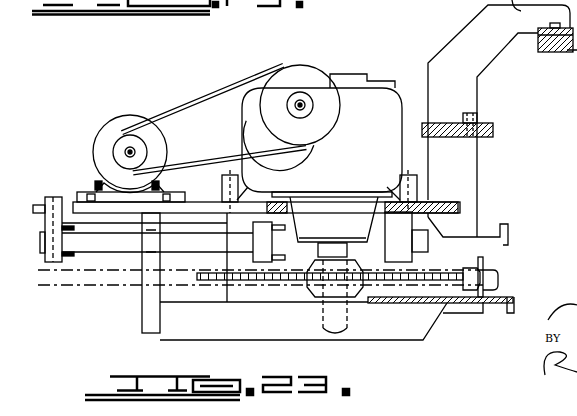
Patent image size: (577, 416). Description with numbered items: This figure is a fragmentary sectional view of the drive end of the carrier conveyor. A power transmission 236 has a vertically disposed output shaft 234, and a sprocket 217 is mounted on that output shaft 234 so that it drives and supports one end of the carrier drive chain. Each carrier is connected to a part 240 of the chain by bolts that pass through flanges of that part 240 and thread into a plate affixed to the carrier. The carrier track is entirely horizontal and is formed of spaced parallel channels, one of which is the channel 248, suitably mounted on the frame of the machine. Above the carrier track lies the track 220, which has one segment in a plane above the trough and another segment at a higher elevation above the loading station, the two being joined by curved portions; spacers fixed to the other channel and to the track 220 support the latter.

The power transmission 236 is at (372, 155).
The track 220 is at (490, 122).
The part of the chain 240 is at (507, 238).
The sprocket 217 is at (287, 281).
The output shaft 234 is at (352, 320).
The channel 248 is at (497, 313).